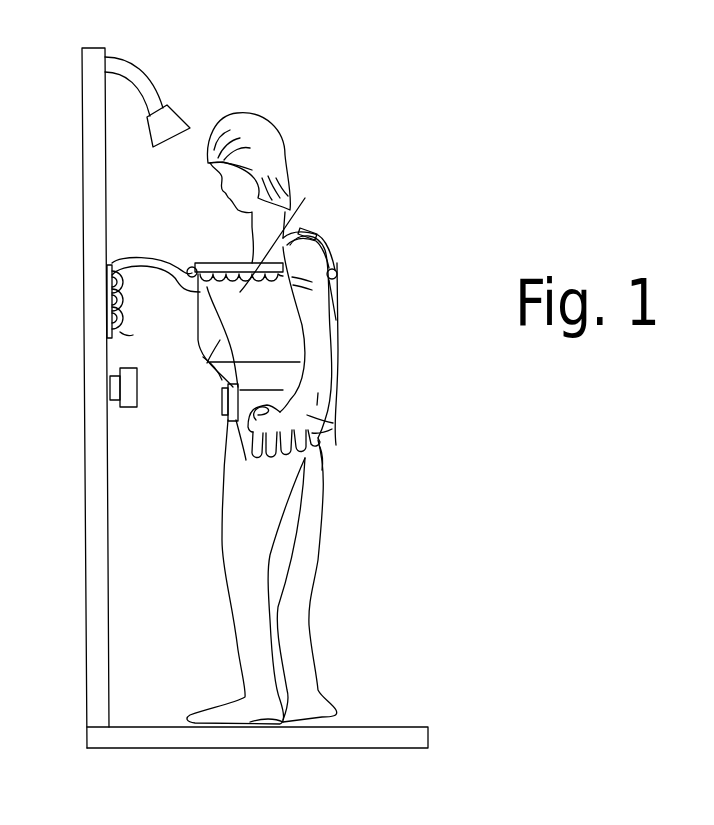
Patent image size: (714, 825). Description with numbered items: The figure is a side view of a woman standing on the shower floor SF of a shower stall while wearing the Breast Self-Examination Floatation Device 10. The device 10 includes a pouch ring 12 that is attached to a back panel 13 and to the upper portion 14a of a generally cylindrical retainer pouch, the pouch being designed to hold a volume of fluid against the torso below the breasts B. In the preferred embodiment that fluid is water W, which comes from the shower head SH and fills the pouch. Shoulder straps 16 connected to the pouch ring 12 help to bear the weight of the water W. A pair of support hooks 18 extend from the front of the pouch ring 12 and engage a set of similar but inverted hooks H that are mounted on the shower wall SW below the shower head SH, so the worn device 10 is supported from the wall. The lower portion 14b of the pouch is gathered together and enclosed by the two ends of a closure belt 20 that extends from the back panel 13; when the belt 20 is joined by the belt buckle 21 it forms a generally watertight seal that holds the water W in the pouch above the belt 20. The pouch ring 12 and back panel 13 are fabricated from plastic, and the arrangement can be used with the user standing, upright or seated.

The Breast Self-Examination Floatation Device 10 is at (403, 127).
The pouch ring 12 is at (340, 276).
The back panel 13 is at (337, 343).
The upper portion of retainer pouch 14a is at (193, 408).
The lower portion of retainer pouch 14b is at (319, 465).
The shoulder straps 16 is at (330, 252).
The support hooks 18 is at (150, 258).
The closure belt 20 is at (322, 415).
The belt buckle 21 is at (218, 417).
The breasts B is at (220, 263).
The wall mounted hooks H is at (133, 335).
The shower floor SF is at (167, 727).
The shower head SH is at (187, 104).
The shower wall SW is at (128, 447).
The water W is at (281, 225).